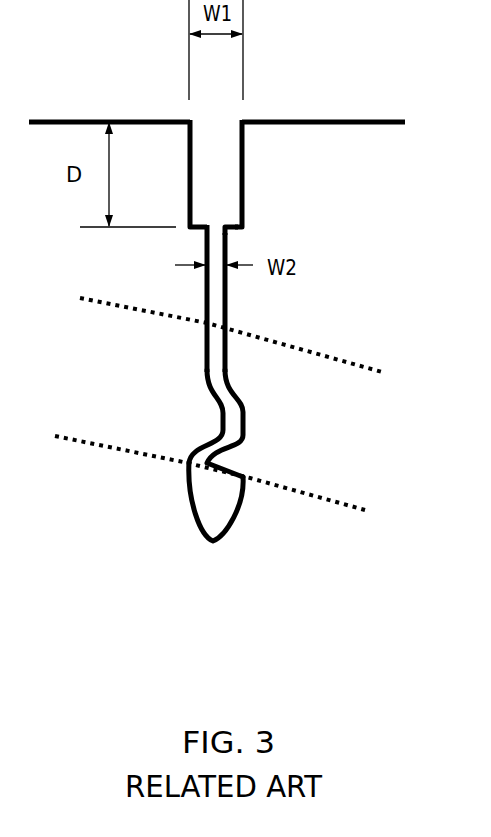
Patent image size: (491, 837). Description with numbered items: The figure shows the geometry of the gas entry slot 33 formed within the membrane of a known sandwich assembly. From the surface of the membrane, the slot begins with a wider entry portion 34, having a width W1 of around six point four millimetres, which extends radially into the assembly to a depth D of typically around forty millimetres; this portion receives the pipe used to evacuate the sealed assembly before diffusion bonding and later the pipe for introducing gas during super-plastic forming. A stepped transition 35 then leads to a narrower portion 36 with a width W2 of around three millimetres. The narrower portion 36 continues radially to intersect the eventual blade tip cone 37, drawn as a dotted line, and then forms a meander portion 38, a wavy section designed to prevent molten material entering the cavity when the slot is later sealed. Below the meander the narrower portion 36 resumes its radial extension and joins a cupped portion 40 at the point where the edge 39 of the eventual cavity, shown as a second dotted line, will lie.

The gas entry slot 33 is at (150, 107).
The wider entry portion 34 is at (226, 163).
The stepped transition 35 is at (243, 229).
The narrower portion 36 is at (205, 298).
The eventual blade tip cone 37 is at (335, 365).
The meander portion 38 is at (219, 413).
The edge of the eventual cavity 39 is at (337, 505).
The cupped portion 40 is at (207, 497).